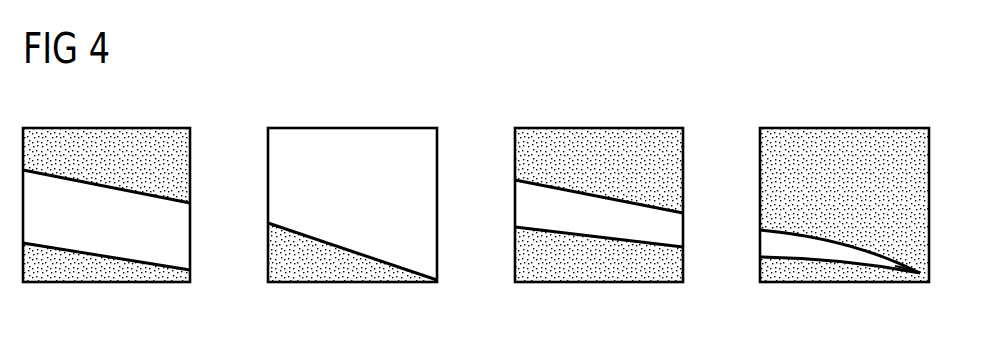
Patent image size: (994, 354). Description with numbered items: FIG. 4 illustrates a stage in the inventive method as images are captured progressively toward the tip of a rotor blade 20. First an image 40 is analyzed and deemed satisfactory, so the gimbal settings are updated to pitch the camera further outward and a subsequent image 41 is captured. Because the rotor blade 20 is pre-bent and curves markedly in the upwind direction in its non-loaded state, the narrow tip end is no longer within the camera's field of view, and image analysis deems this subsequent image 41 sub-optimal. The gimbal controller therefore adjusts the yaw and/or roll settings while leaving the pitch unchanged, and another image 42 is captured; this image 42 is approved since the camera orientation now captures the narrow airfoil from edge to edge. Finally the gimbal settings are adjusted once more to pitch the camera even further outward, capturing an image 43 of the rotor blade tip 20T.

The rotor blade 20 is at (180, 240).
The rotor blade tip 20T is at (892, 265).
The image 40 is at (104, 136).
The subsequent image 41 is at (352, 138).
The image 42 is at (597, 138).
The image 43 is at (845, 138).